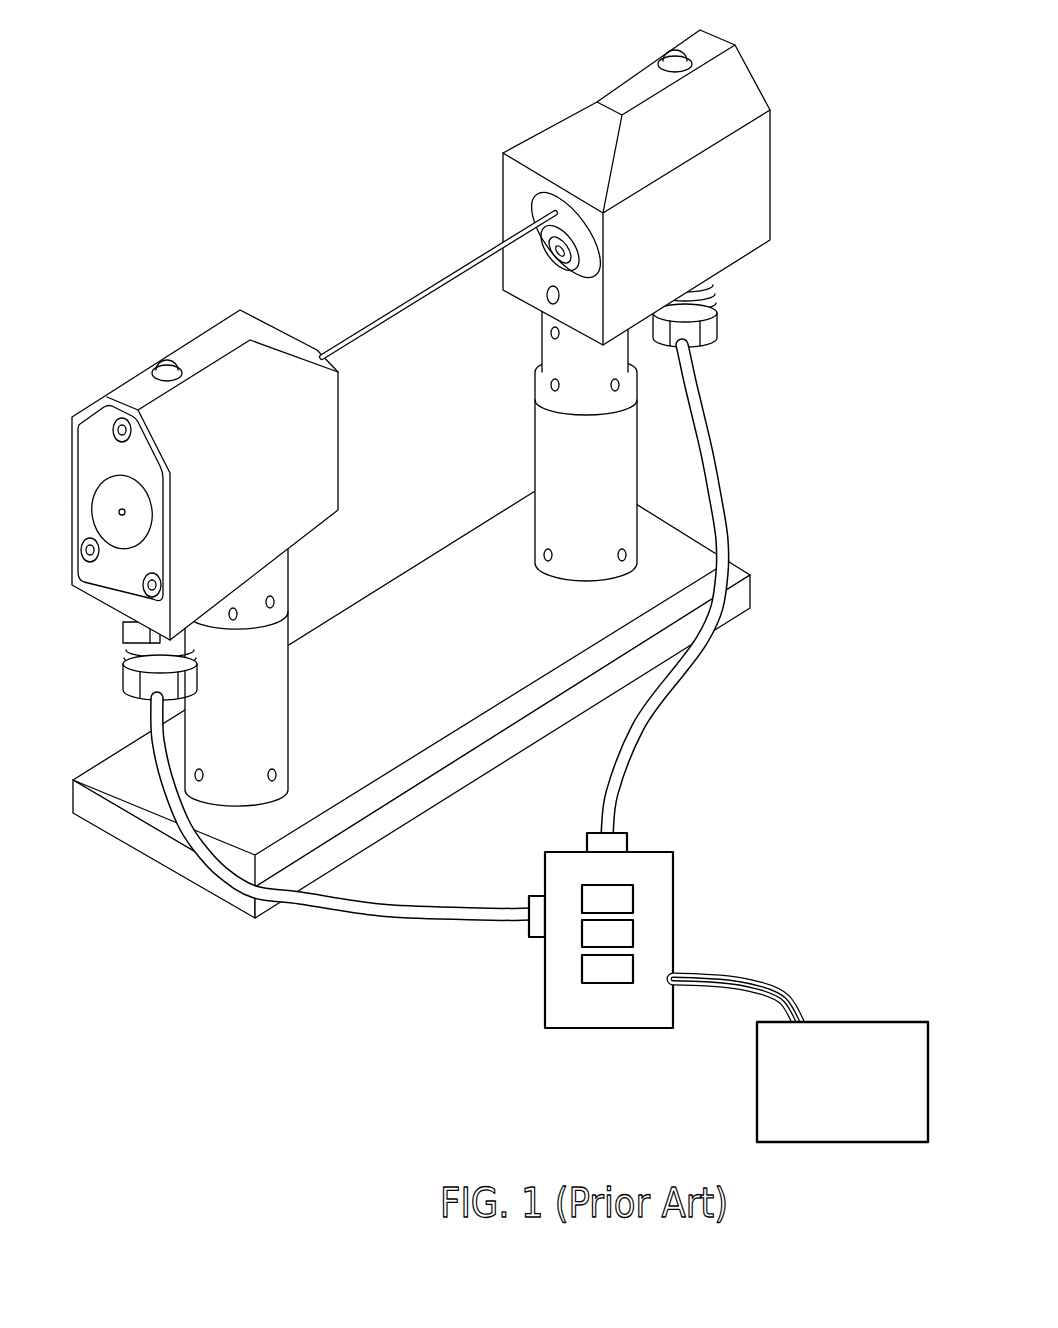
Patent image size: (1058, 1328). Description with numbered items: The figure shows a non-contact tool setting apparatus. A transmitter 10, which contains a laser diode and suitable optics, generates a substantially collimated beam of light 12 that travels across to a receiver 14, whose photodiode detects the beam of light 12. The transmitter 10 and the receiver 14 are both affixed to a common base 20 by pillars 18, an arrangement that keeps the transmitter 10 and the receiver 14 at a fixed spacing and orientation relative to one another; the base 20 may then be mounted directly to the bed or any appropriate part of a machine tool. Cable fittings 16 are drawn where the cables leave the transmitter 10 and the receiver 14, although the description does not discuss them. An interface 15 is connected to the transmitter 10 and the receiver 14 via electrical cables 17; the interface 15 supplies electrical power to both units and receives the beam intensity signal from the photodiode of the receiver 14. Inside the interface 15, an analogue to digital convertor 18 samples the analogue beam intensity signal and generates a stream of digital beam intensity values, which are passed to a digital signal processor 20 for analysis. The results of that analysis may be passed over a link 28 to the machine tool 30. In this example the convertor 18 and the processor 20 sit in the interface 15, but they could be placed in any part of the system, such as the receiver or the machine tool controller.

The transmitter 10 is at (130, 380).
The collimated beam of light 12 is at (417, 293).
The receiver 14 is at (738, 78).
The interface 15 is at (675, 943).
The cable fitting 16 is at (150, 690).
The electrical cables 17 is at (602, 800).
The pillars 18 is at (272, 690).
The base 20 is at (608, 680).
The link 28 is at (760, 983).
The machine tool 30 is at (824, 1094).